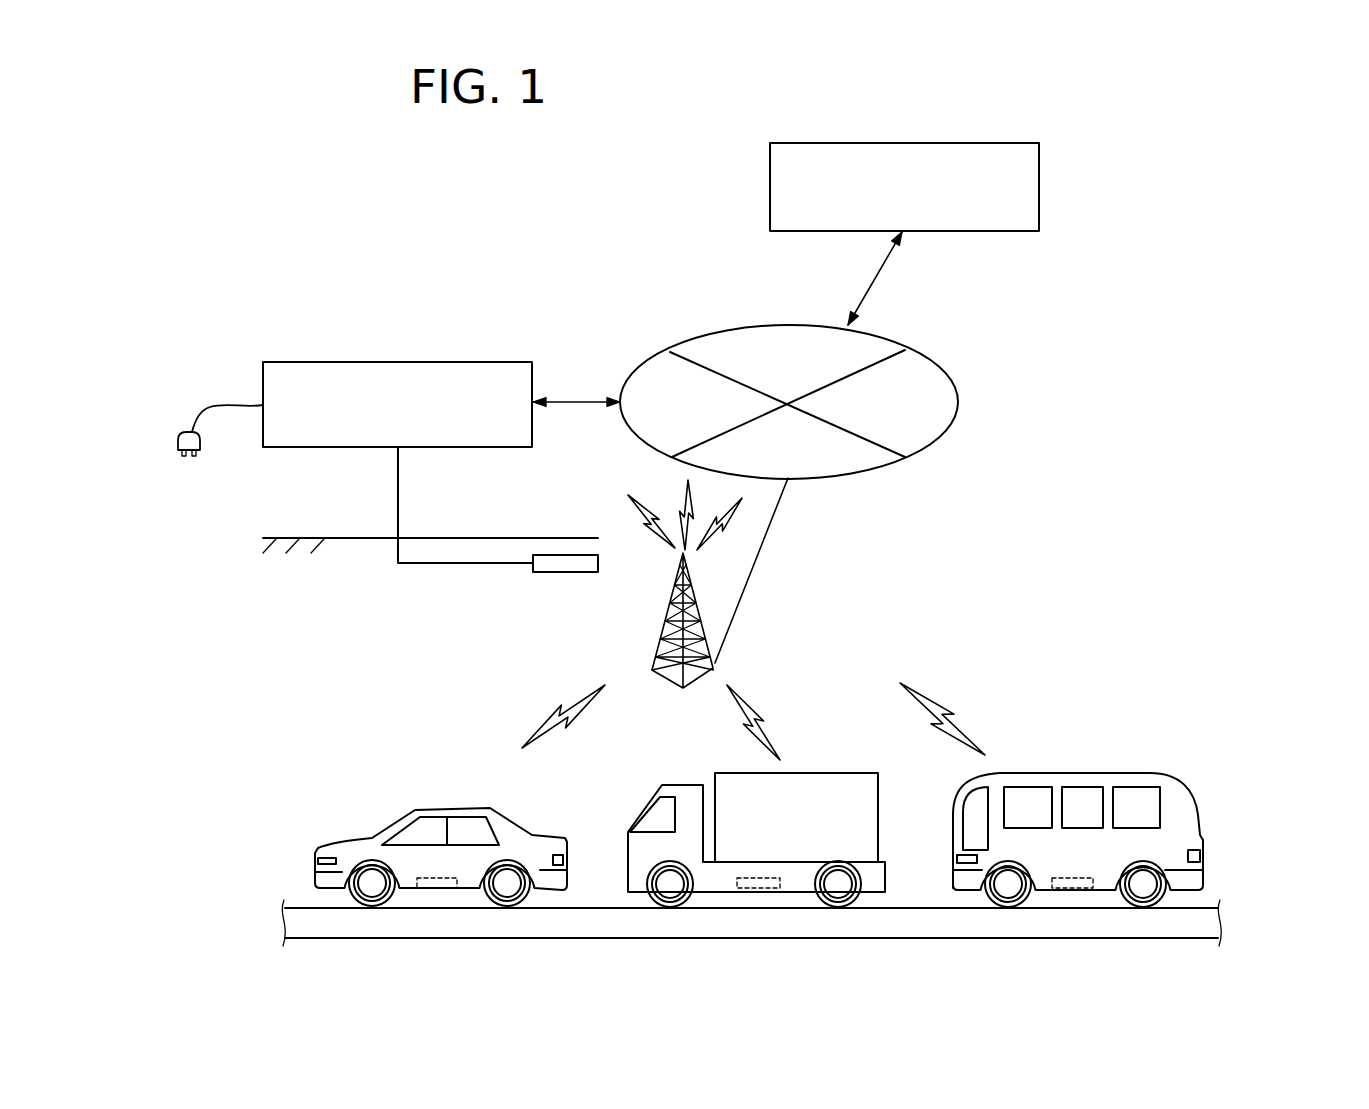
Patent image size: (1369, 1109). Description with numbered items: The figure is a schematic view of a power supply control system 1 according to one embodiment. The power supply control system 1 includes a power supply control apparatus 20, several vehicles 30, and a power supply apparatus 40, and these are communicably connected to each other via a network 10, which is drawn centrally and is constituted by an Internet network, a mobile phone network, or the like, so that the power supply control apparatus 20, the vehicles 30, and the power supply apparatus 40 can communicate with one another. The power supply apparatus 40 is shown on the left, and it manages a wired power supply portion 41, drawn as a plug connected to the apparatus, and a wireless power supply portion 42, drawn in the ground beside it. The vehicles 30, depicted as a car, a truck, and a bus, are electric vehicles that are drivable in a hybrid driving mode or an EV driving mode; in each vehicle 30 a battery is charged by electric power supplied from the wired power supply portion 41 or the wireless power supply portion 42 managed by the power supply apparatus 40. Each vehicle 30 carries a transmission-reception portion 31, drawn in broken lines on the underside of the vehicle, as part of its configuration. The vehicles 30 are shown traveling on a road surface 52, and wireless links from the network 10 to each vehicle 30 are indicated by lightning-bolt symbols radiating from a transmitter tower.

The power supply control system 1 is at (704, 138).
The network 10 is at (784, 326).
The power supply control apparatus 20 is at (997, 143).
The vehicle 30 is at (517, 830).
The transmission-reception portion 31 is at (457, 881).
The power supply apparatus 40 is at (490, 362).
The wired power supply portion 41 is at (207, 395).
The wireless power supply portion 42 is at (560, 573).
The road 52 is at (1177, 930).